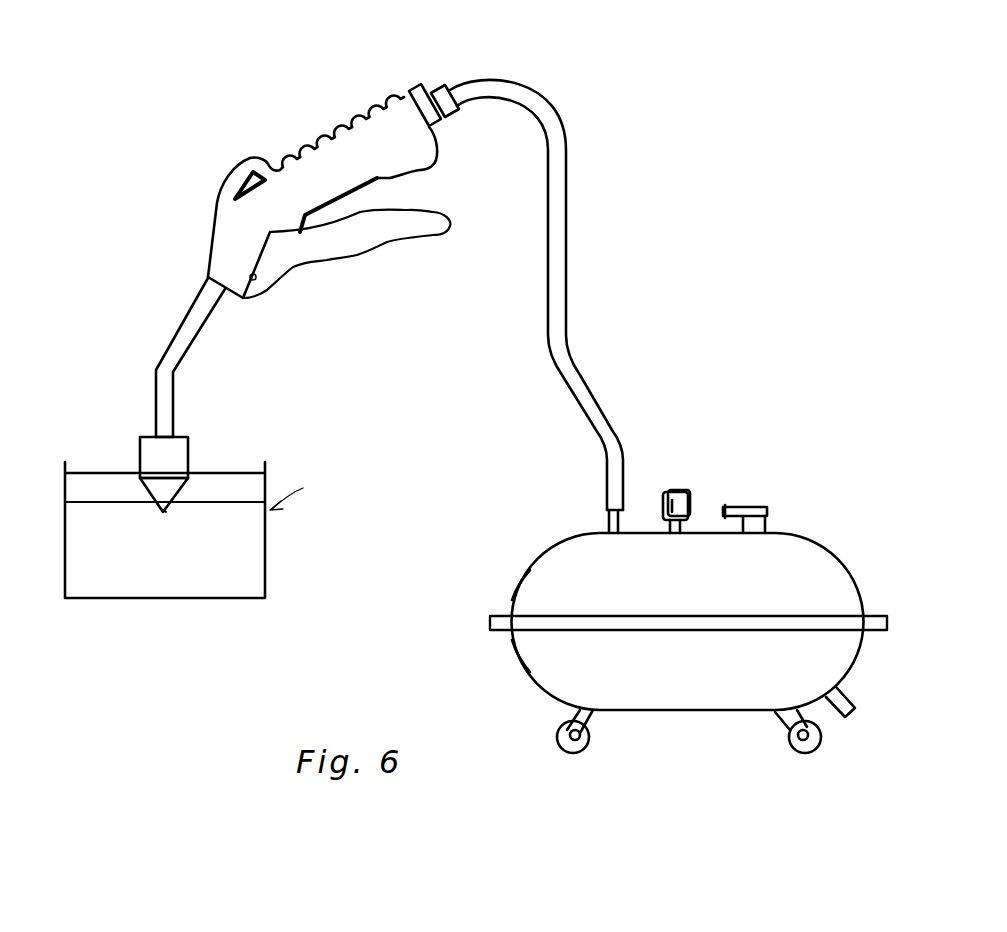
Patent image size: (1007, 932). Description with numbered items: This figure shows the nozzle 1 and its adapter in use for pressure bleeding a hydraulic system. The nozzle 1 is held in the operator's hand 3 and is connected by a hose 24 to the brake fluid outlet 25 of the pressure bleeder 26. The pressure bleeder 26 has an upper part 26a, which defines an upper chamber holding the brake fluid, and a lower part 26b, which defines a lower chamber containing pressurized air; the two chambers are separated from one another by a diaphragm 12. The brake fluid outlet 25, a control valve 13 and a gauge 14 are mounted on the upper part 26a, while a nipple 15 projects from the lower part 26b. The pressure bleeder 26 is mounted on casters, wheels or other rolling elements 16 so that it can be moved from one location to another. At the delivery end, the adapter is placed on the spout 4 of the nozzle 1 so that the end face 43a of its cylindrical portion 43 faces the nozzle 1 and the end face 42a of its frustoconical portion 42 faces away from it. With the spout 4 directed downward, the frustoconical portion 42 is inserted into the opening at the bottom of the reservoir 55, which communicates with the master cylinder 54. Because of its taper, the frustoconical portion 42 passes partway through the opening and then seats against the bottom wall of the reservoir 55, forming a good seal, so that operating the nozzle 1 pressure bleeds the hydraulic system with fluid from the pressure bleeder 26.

The nozzle 1 is at (312, 106).
The operator's hand 3 is at (372, 248).
The spout 4 is at (183, 322).
The diaphragm 12 is at (489, 622).
The control valve 13 is at (767, 506).
The gauge 14 is at (683, 493).
The nipple 15 is at (850, 712).
The rolling elements 16 is at (590, 722).
The hose 24 is at (567, 218).
The brake fluid outlet 25 is at (606, 528).
The pressure bleeder 26 is at (761, 428).
The upper part 26a is at (527, 577).
The lower part 26b is at (524, 664).
The frustoconical portion 42 is at (168, 508).
The end face 42a is at (168, 514).
The cylindrical portion 43 is at (140, 465).
The end face 43a is at (148, 437).
The master cylinder 54 is at (267, 577).
The reservoir 55 is at (268, 483).